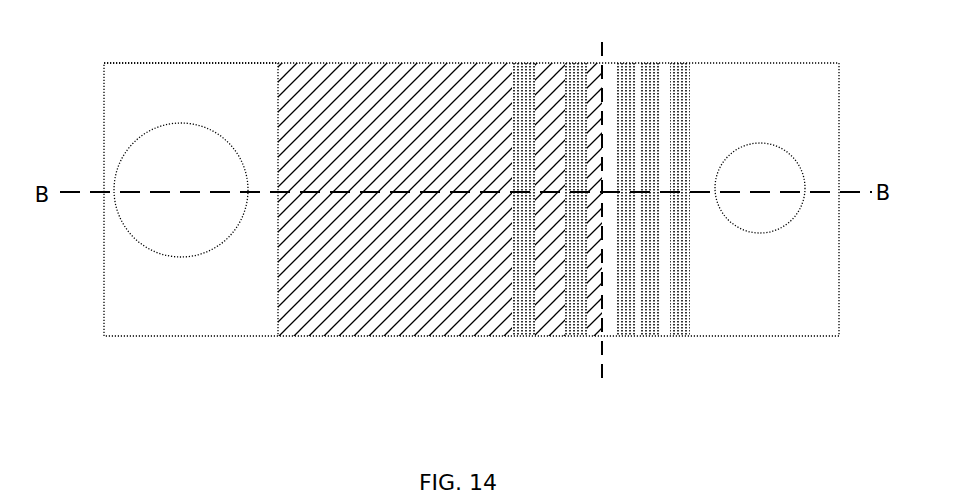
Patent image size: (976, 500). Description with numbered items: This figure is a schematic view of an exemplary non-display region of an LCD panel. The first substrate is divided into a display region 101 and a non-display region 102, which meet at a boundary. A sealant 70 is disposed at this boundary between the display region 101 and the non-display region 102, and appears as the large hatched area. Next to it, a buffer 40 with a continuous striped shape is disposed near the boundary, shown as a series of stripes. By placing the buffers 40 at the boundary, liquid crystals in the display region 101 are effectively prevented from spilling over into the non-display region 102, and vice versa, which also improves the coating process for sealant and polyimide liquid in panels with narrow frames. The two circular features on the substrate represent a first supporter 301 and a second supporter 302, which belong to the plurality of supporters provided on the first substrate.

The display region 101 is at (785, 73).
The non-display region 102 is at (208, 88).
The buffer 40 is at (633, 62).
The sealant 70 is at (387, 335).
The first supporter 301 is at (180, 258).
The second supporter 302 is at (778, 230).